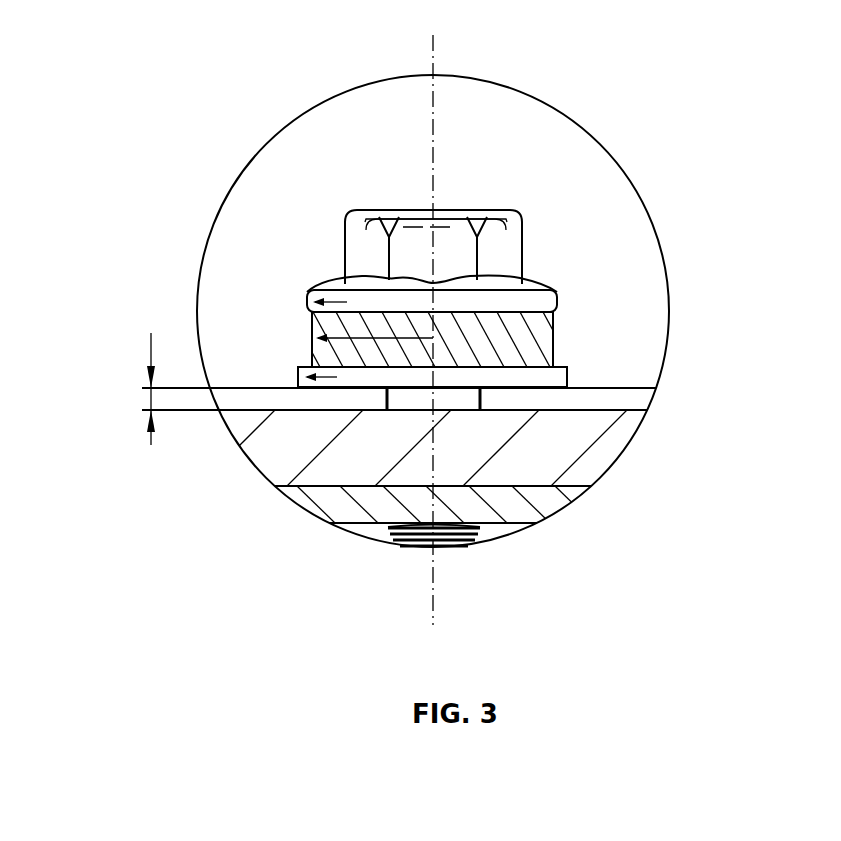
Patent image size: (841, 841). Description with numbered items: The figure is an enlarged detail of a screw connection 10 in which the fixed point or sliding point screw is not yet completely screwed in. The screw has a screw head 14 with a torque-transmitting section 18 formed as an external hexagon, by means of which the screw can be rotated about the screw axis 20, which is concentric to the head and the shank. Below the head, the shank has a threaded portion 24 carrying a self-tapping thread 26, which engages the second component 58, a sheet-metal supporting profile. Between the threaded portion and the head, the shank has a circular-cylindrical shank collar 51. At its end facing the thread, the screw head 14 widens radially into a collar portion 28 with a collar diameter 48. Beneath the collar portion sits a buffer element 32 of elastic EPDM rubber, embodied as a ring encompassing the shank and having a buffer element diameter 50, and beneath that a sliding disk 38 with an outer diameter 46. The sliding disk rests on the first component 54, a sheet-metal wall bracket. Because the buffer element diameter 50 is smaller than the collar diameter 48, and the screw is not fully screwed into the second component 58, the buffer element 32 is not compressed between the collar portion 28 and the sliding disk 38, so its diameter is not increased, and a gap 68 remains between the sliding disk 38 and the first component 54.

The screw connection 10 is at (644, 132).
The screw head 14 is at (510, 240).
The torque-transmitting section 18 is at (477, 240).
The screw axis 20 is at (433, 52).
The threaded portion 24 is at (453, 550).
The self-tapping thread 26 is at (463, 580).
The collar portion 28 is at (545, 300).
The buffer element 32 is at (540, 328).
The sliding disk 38 is at (555, 377).
The outer diameter 46 is at (326, 388).
The collar diameter 48 is at (340, 290).
The buffer element diameter 50 is at (318, 341).
The shank collar 51 is at (407, 398).
The first component 54 is at (617, 442).
The second component 58 is at (557, 503).
The gap 68 is at (147, 343).